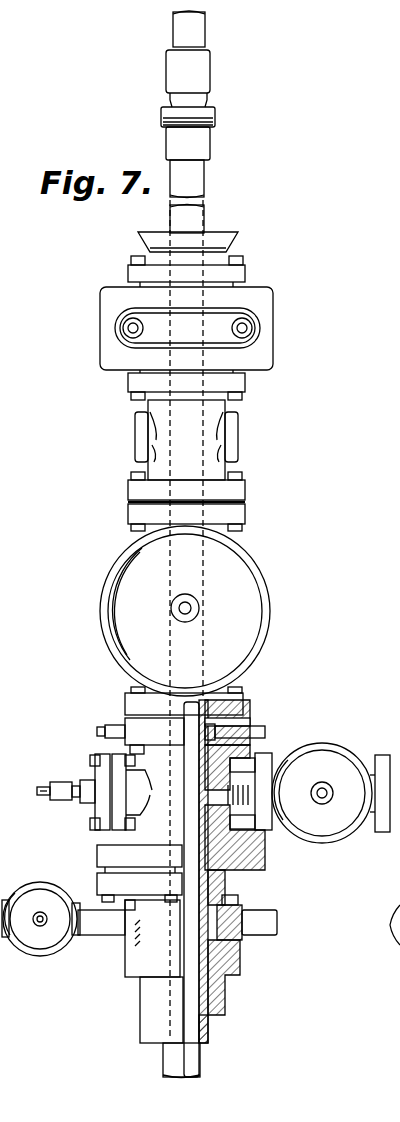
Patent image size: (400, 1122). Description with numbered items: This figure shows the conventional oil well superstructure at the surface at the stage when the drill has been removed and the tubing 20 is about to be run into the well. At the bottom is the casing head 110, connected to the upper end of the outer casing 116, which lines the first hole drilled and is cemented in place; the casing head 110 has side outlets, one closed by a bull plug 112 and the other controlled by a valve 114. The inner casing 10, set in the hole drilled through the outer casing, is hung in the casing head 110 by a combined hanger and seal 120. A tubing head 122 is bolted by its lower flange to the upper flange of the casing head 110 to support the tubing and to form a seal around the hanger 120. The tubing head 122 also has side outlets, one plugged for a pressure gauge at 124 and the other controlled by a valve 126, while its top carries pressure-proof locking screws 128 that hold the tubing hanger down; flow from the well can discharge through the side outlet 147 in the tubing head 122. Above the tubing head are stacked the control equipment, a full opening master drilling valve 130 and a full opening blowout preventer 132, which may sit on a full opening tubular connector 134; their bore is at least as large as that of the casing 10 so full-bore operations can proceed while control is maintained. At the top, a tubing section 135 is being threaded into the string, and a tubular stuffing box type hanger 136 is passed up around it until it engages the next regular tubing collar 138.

The inner casing 10 is at (208, 1030).
The tubing 20 is at (205, 42).
The casing head 110 is at (152, 938).
The bull plug 112 is at (262, 918).
The valve 114 is at (52, 938).
The outer casing 116 is at (225, 1000).
The combined hanger and seal 120 is at (200, 890).
The tubing head 122 is at (147, 827).
The pressure gauge plug 124 is at (62, 785).
The valve 126 is at (320, 752).
The pressure-proof locking screws 128 is at (245, 725).
The full opening master drilling valve 130 is at (245, 590).
The full opening blowout preventer 132 is at (262, 352).
The full opening tubular connector 134 is at (210, 432).
The tubing section 135 is at (204, 184).
The tubular stuffing box type hanger 136 is at (205, 143).
The tubing collar 138 is at (205, 76).
The side outlet 147 is at (252, 772).